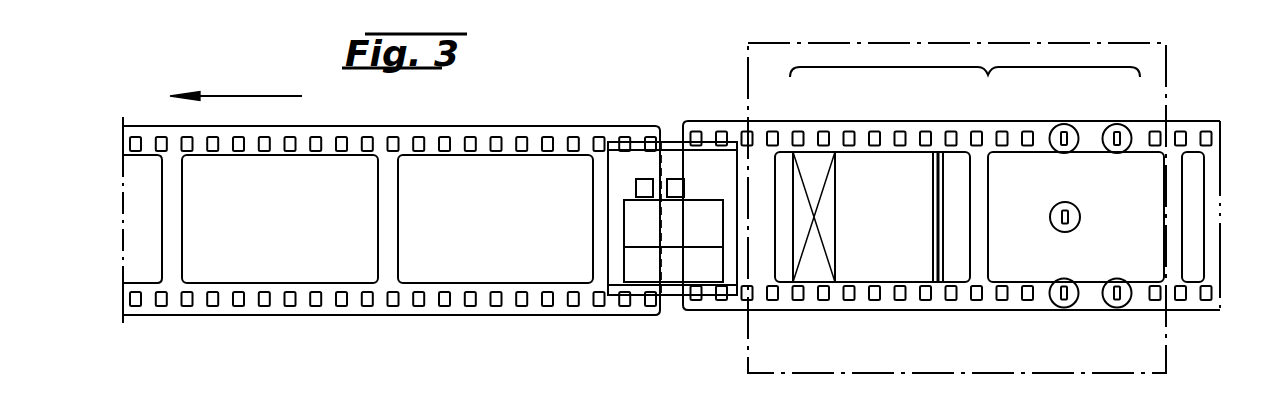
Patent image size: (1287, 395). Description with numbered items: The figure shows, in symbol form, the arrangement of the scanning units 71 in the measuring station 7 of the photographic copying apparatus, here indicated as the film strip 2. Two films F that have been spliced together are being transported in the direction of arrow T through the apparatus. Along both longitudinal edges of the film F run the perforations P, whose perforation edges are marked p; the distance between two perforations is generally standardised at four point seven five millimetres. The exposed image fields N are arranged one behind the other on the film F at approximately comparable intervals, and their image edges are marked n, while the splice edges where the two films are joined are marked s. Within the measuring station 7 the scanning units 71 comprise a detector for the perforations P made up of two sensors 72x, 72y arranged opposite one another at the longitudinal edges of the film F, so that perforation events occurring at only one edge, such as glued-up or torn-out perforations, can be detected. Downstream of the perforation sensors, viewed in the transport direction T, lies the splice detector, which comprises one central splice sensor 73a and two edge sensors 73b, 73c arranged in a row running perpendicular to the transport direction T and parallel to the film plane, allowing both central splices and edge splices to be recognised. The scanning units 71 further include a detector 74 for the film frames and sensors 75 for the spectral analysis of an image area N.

The film strip 2 is at (190, 335).
The film F is at (530, 122).
The transport direction T is at (261, 95).
The perforations P is at (392, 136).
The perforation edges p is at (468, 136).
The image area N is at (285, 270).
The image edges n is at (162, 206).
The splice edges s is at (600, 208).
The measuring station 7 is at (1104, 38).
The scanning units 71 is at (965, 87).
The perforation sensor 72x is at (1124, 129).
The perforation sensor 72y is at (1122, 306).
The central splice sensor 73a is at (1057, 227).
The edge sensor 73b is at (1068, 152).
The edge sensor 73c is at (1060, 306).
The detector for the film frames 74 is at (934, 220).
The sensors for the spectral analysis 75 is at (827, 237).